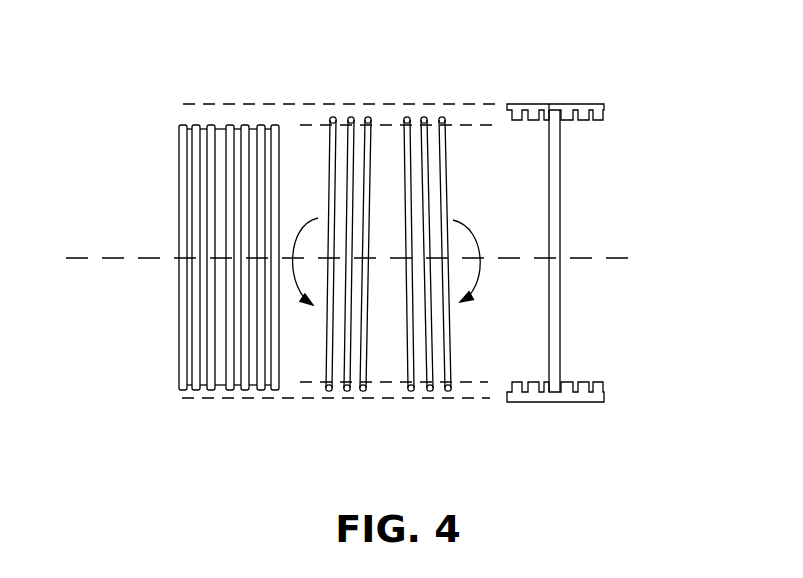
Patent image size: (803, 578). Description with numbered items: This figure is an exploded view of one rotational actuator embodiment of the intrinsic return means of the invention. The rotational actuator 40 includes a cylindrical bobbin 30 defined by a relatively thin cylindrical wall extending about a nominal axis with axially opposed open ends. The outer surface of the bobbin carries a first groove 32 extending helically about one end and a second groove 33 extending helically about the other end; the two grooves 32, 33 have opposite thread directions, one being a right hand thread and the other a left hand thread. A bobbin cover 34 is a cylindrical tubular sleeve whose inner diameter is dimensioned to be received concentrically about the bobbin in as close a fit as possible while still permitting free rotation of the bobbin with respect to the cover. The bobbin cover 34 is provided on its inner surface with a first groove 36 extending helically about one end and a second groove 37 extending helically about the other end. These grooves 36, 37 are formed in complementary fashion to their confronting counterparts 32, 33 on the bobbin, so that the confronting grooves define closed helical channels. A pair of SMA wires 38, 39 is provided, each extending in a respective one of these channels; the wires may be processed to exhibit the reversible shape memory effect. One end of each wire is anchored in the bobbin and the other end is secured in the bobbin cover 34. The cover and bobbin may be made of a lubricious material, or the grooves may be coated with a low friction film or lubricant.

The cylindrical bobbin 30 is at (187, 93).
The first groove 32 is at (190, 122).
The second groove 33 is at (252, 122).
The bobbin cover 34 is at (574, 207).
The first groove 36 is at (526, 122).
The second groove 37 is at (580, 123).
The SMA wire 38 is at (340, 400).
The SMA wire 39 is at (443, 395).
The rotational actuator 40 is at (213, 277).